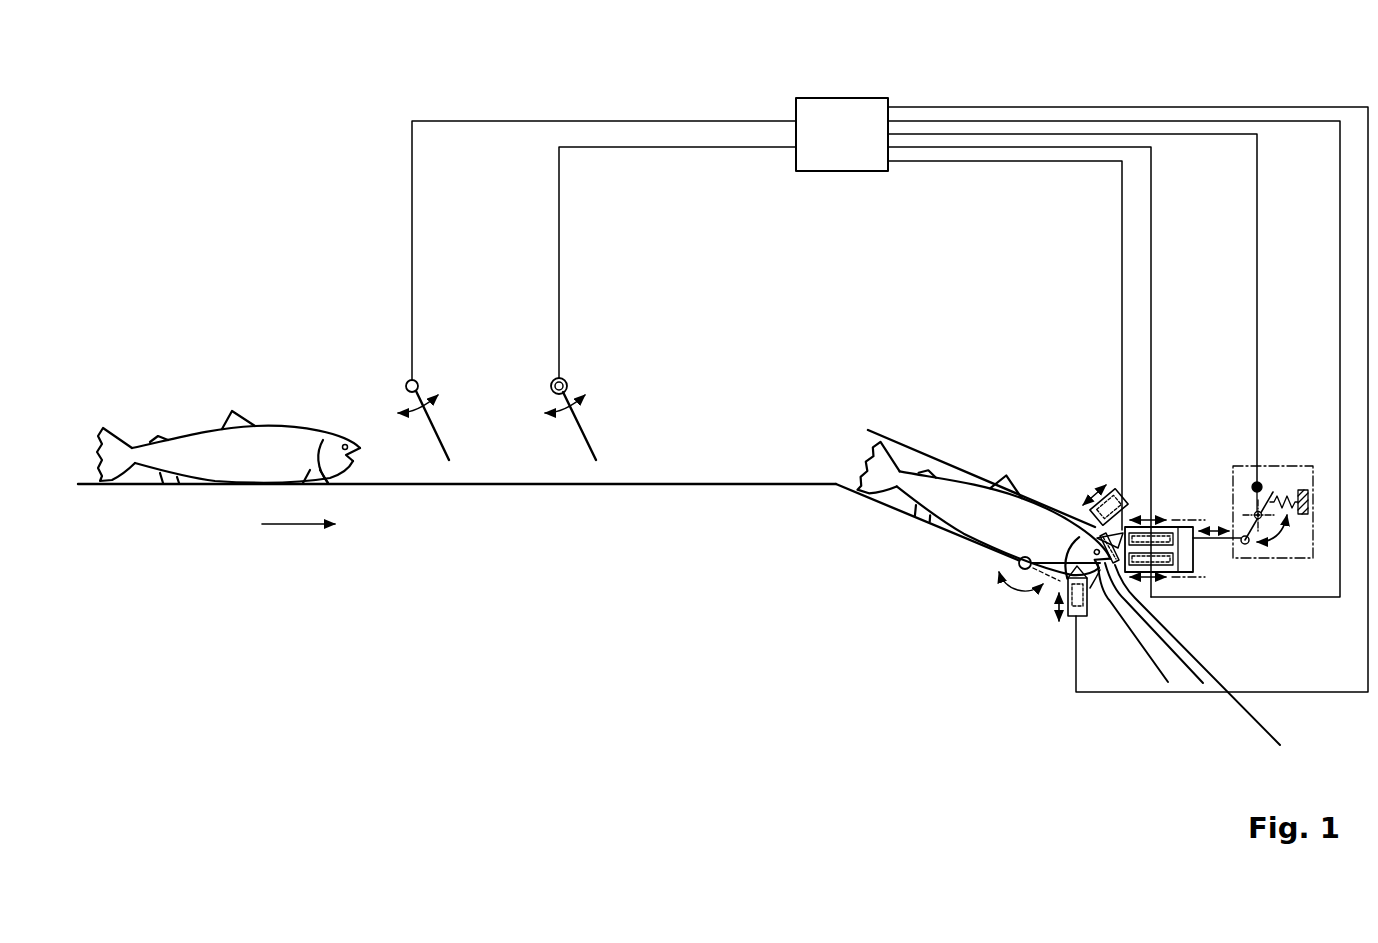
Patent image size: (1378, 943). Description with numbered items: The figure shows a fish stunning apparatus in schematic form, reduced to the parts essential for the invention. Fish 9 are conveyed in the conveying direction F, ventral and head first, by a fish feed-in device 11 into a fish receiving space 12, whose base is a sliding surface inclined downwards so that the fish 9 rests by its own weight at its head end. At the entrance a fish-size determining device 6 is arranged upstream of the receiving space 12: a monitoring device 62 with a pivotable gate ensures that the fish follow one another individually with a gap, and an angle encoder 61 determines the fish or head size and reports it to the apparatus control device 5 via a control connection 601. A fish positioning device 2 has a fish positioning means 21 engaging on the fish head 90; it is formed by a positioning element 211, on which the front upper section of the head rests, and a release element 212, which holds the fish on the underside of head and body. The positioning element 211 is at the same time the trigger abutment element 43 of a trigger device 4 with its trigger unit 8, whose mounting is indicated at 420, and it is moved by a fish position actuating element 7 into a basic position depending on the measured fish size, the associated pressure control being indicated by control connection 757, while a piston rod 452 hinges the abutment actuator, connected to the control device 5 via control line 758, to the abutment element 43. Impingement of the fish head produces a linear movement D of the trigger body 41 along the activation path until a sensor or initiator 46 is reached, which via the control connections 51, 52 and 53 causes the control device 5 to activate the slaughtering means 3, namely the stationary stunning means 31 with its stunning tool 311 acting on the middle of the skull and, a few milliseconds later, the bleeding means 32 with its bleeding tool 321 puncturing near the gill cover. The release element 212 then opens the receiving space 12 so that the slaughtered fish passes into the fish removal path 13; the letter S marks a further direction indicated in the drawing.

The fish positioning device 2 is at (589, 567).
The slaughtering means 3 is at (1083, 459).
The trigger device 4 is at (1205, 498).
The apparatus control device 5 is at (840, 98).
The fish-size determining device 6 is at (597, 290).
The fish position actuating element 7 is at (1128, 520).
The trigger unit 8 is at (1192, 585).
The fish 9 is at (278, 440).
The fish feed-in device 11 is at (530, 486).
The fish receiving space 12 is at (883, 503).
The fish removal path 13 is at (1152, 662).
The fish positioning means 21 is at (1000, 588).
The stunning means 31 is at (1116, 490).
The bleeding means 32 is at (1082, 616).
The trigger body 41 is at (1196, 553).
The trigger abutment element 43 is at (1206, 670).
The sensor or initiator 46 is at (1273, 534).
The control connection 51 is at (1122, 258).
The control connection 52 is at (1368, 262).
The control connection 53 is at (1340, 300).
The angle encoder 61 is at (589, 440).
The monitoring device 62 is at (442, 440).
The fish head 90 is at (340, 438).
The positioning element 211 is at (1203, 683).
The release element 212 is at (1059, 623).
The stunning tool 311 is at (1093, 522).
The bleeding tool 321 is at (1090, 588).
The mounting of the trigger unit 420 is at (1190, 520).
The piston rod 452 is at (1150, 590).
The control connection 601 is at (559, 265).
The control connection 757 is at (1151, 225).
The control line 758 is at (1340, 204).
The linear movement D is at (1213, 527).
The conveying direction F is at (298, 541).
The pivoting direction S is at (1280, 533).